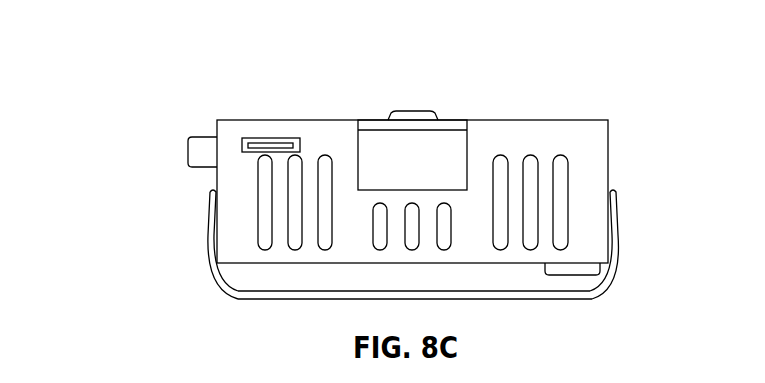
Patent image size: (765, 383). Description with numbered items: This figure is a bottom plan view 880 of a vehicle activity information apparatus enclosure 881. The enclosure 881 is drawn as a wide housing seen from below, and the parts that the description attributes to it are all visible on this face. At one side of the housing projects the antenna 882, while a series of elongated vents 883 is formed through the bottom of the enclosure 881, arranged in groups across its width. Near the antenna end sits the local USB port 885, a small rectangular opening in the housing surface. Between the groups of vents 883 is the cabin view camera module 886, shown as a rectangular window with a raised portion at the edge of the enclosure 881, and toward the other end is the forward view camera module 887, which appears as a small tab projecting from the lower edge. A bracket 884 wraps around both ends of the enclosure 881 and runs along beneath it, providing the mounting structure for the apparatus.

The bottom plan view 880 is at (156, 43).
The vehicle activity information apparatus enclosure 881 is at (608, 152).
The antenna 882 is at (188, 150).
The vents 883 is at (255, 227).
The bracket 884 is at (244, 299).
The local USB port 885 is at (272, 138).
The cabin view camera module 886 is at (412, 108).
The forward view camera module 887 is at (570, 277).